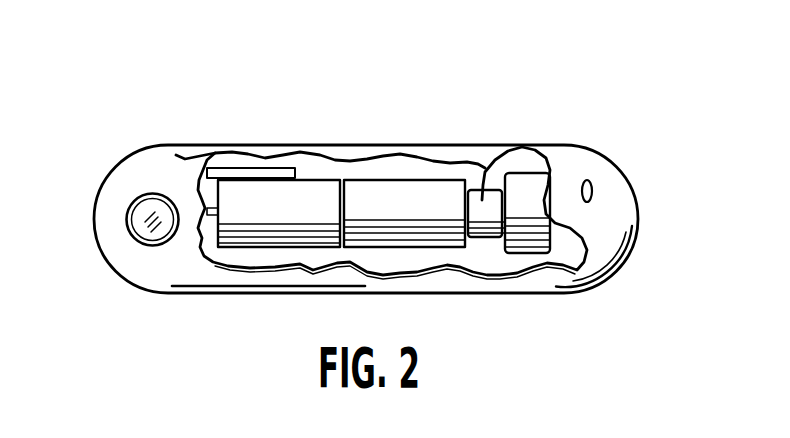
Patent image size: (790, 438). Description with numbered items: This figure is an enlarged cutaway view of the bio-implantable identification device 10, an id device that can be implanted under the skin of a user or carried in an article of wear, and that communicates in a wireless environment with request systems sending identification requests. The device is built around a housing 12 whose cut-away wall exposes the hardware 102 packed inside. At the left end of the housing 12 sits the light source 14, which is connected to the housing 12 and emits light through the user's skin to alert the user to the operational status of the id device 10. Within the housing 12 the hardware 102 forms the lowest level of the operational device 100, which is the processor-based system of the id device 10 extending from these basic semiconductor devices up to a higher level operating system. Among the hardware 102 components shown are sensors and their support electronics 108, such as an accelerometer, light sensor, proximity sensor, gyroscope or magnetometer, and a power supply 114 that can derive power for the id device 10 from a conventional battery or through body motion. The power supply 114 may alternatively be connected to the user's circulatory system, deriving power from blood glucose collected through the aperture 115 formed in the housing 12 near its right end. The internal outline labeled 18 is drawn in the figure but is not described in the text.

The bio-implantable identification device 10 is at (252, 67).
The housing 12 is at (620, 203).
The light source 14 is at (128, 206).
The cavity outline 18 is at (176, 155).
The operational device 100 is at (489, 262).
The hardware 102 is at (305, 190).
The sensors and their support electronics 108 is at (522, 190).
The power supply 114 is at (523, 182).
The aperture 115 is at (590, 178).